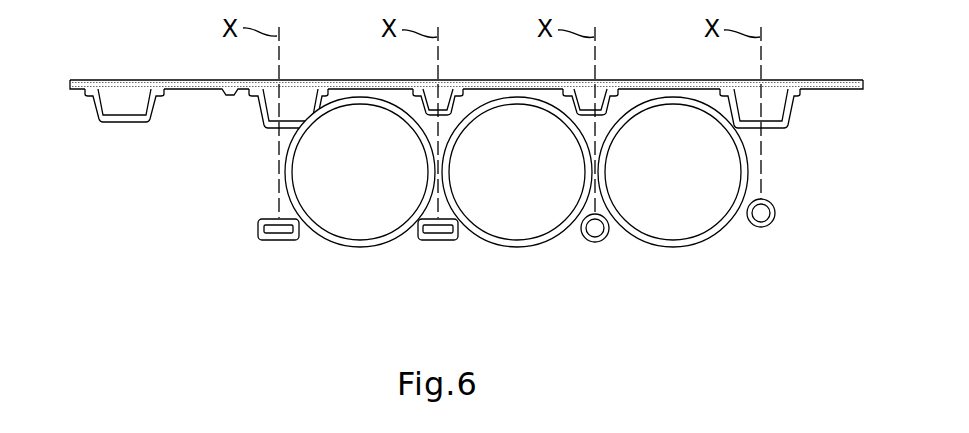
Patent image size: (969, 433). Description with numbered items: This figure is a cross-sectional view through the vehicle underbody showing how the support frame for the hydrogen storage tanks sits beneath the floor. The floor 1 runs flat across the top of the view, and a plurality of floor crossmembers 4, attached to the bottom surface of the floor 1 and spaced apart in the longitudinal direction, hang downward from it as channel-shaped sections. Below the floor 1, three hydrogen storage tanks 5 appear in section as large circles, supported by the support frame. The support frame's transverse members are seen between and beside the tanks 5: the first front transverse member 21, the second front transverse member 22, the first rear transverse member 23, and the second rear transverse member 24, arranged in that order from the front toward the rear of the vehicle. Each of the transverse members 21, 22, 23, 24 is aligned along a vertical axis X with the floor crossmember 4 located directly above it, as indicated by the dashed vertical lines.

The floor 1 is at (358, 80).
The floor crossmember 4 is at (120, 123).
The hydrogen storage tank 5 is at (358, 248).
The first front transverse member 21 is at (277, 241).
The second front transverse member 22 is at (437, 241).
The first rear transverse member 23 is at (594, 243).
The second rear transverse member 24 is at (761, 228).